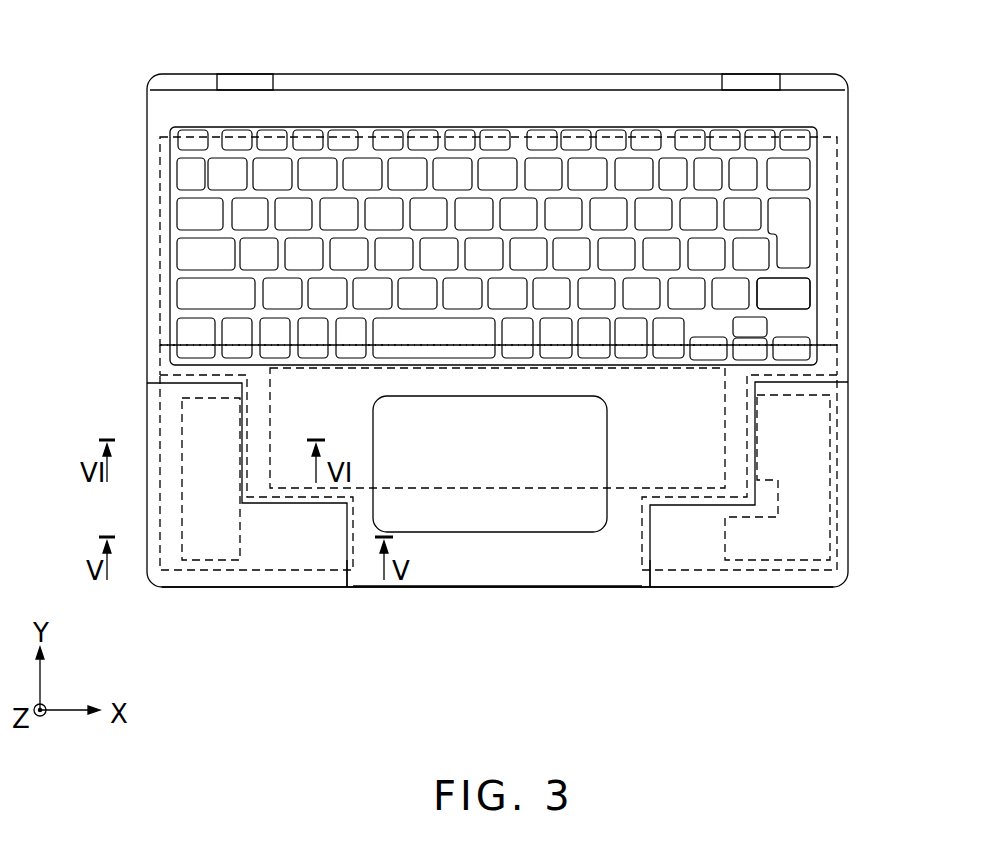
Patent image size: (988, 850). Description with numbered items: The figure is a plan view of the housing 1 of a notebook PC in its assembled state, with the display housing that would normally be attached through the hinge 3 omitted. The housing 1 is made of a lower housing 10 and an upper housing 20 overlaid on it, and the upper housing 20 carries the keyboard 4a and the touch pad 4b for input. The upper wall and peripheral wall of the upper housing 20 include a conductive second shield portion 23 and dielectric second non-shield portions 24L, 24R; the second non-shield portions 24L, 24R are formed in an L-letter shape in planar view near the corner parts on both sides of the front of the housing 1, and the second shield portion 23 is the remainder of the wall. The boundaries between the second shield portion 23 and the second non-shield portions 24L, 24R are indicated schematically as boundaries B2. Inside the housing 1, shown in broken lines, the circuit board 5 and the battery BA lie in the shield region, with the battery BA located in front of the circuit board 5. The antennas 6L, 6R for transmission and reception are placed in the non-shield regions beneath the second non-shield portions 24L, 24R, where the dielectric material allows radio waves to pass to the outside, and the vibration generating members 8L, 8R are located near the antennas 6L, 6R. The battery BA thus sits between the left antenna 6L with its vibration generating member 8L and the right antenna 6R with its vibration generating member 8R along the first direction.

The housing 1 is at (96, 171).
The hinge 3 is at (245, 80).
The keyboard 4a is at (798, 293).
The touch pad 4b is at (530, 513).
The circuit board 5 is at (160, 264).
The antenna 6L is at (182, 420).
The antenna 6R is at (830, 483).
The vibration generating member 8L is at (165, 370).
The vibration generating member 8R is at (827, 372).
The lower housing 10 is at (407, 596).
The upper housing 20 is at (582, 560).
The second shield portion 23 is at (492, 565).
The second non-shield portion 24L is at (257, 580).
The second non-shield portion 24R is at (743, 580).
The boundary B2 is at (345, 580).
The battery BA is at (692, 350).